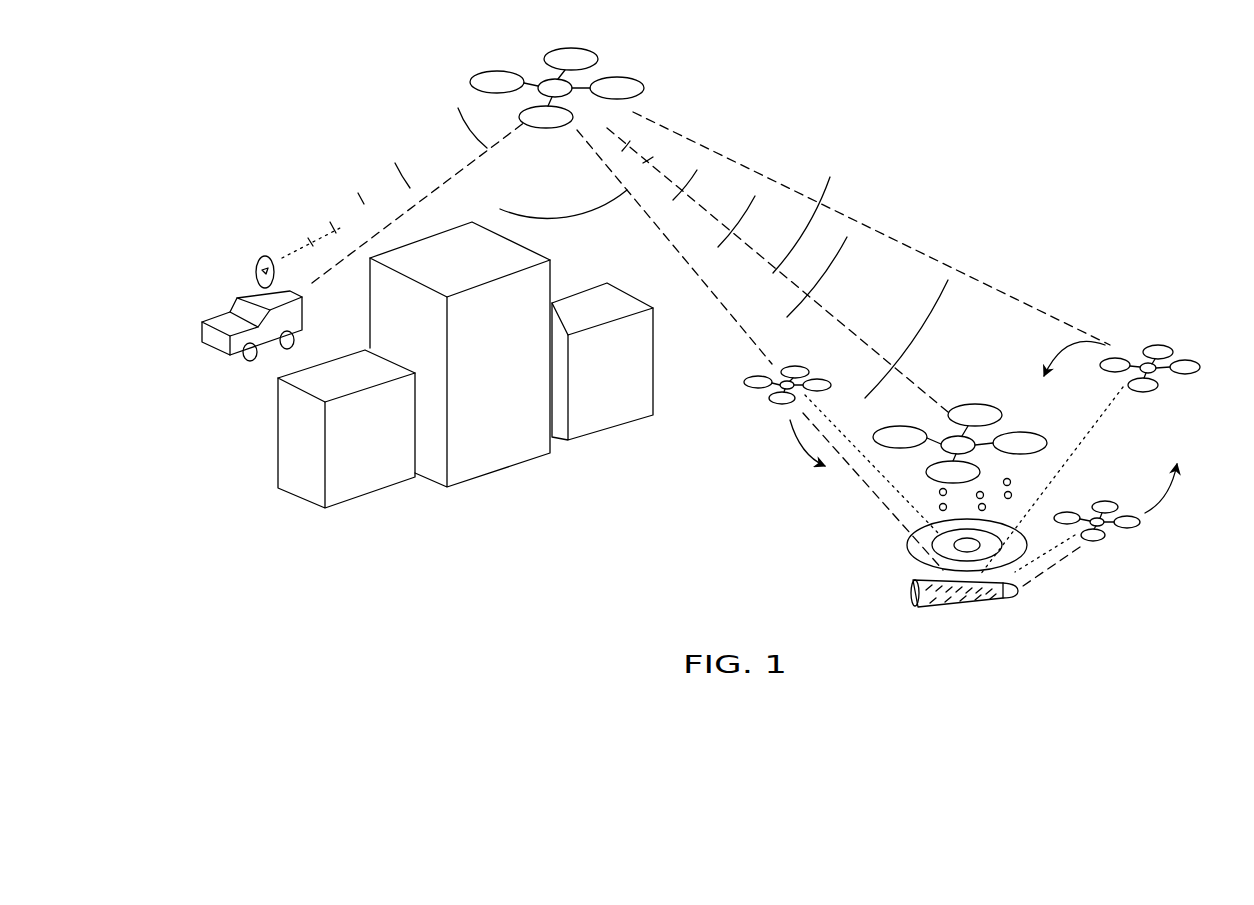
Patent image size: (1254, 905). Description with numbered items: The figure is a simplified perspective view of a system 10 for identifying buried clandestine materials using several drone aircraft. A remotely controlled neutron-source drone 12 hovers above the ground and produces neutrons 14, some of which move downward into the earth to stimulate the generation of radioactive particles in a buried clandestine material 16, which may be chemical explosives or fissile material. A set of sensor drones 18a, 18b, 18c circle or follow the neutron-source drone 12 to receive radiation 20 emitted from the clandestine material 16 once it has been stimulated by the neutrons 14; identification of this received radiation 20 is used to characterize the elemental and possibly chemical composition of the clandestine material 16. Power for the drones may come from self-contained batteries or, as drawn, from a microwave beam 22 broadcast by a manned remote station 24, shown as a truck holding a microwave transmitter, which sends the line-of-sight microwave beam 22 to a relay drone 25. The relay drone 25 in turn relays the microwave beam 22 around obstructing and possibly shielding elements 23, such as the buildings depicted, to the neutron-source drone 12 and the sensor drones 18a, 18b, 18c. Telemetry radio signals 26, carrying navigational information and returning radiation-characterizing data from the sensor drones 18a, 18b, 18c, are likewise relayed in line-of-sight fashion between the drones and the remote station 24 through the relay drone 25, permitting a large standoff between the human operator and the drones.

The system 10 is at (1045, 56).
The neutron-source drone 12 is at (1017, 398).
The neutrons 14 is at (939, 506).
The clandestine material 16 is at (972, 600).
The sensor drone 18a is at (1159, 323).
The sensor drone 18b is at (1122, 539).
The sensor drone 18c is at (762, 400).
The received radiation 20 is at (867, 458).
The microwave beam 22 is at (371, 212).
The obstructing elements 23 is at (435, 468).
The manned remote station 24 is at (240, 297).
The relay drone 25 is at (617, 49).
The telemetry radio signals 26 is at (422, 206).